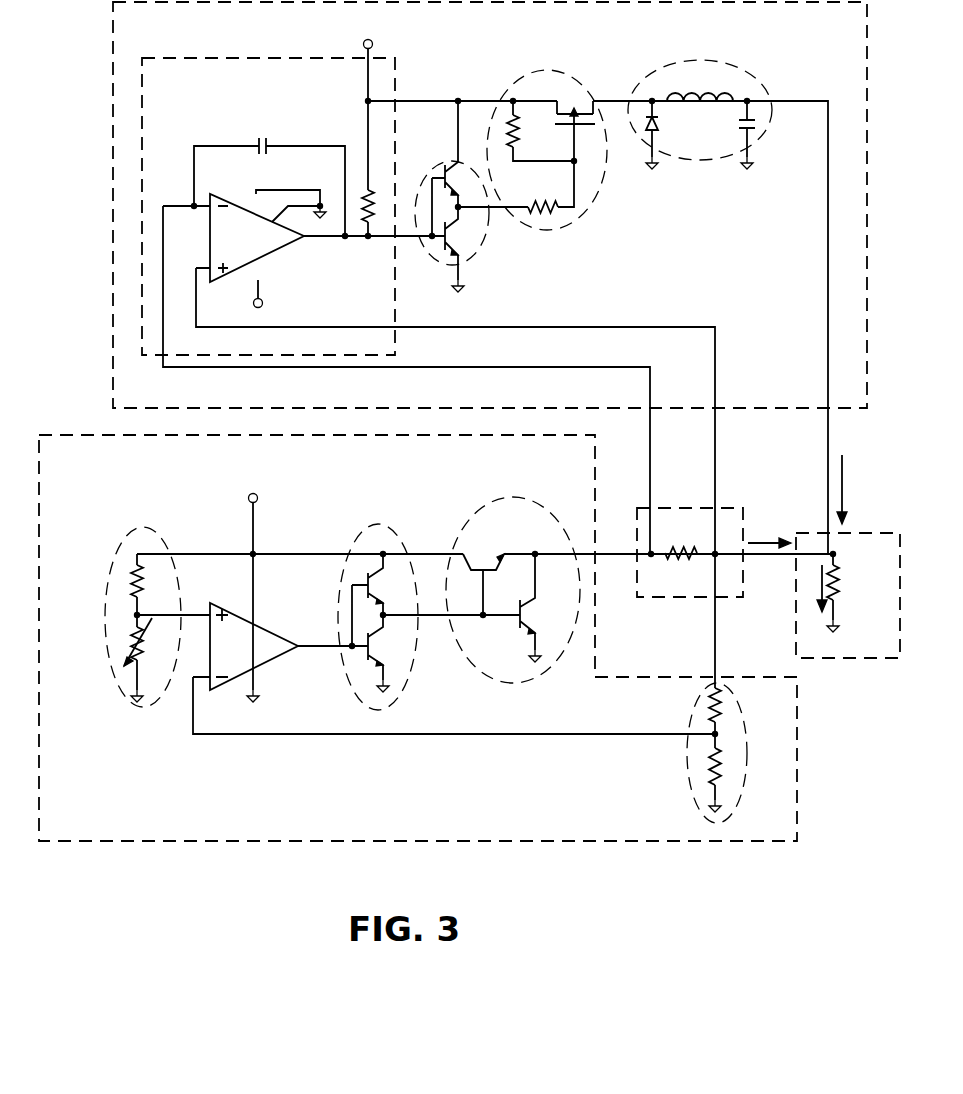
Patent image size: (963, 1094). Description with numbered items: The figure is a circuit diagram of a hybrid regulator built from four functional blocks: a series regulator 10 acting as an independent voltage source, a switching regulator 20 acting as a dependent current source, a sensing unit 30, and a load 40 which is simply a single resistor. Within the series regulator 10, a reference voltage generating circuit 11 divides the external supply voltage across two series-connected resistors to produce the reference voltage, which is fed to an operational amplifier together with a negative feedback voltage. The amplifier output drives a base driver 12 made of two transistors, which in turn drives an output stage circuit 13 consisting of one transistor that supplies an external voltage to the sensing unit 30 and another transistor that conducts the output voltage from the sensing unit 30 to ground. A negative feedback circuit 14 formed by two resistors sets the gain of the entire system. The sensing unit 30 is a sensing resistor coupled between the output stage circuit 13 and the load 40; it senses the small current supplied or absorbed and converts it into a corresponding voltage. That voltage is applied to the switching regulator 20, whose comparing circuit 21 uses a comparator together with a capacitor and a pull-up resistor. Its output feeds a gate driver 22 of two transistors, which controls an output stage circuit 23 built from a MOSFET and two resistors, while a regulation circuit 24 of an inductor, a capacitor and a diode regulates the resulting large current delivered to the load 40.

The series regulator 10 is at (165, 843).
The reference voltage generating circuit 11 is at (135, 536).
The base driver 12 is at (388, 524).
The output stage circuit 13 is at (546, 680).
The negative feedback circuit 14 is at (688, 760).
The switching regulator 20 is at (112, 175).
The comparing circuit 21 is at (247, 58).
The gate driver 22 is at (473, 268).
The output stage circuit 23 is at (592, 203).
The regulation circuit 24 is at (728, 70).
The sensing unit 30 is at (726, 508).
The load 40 is at (860, 535).